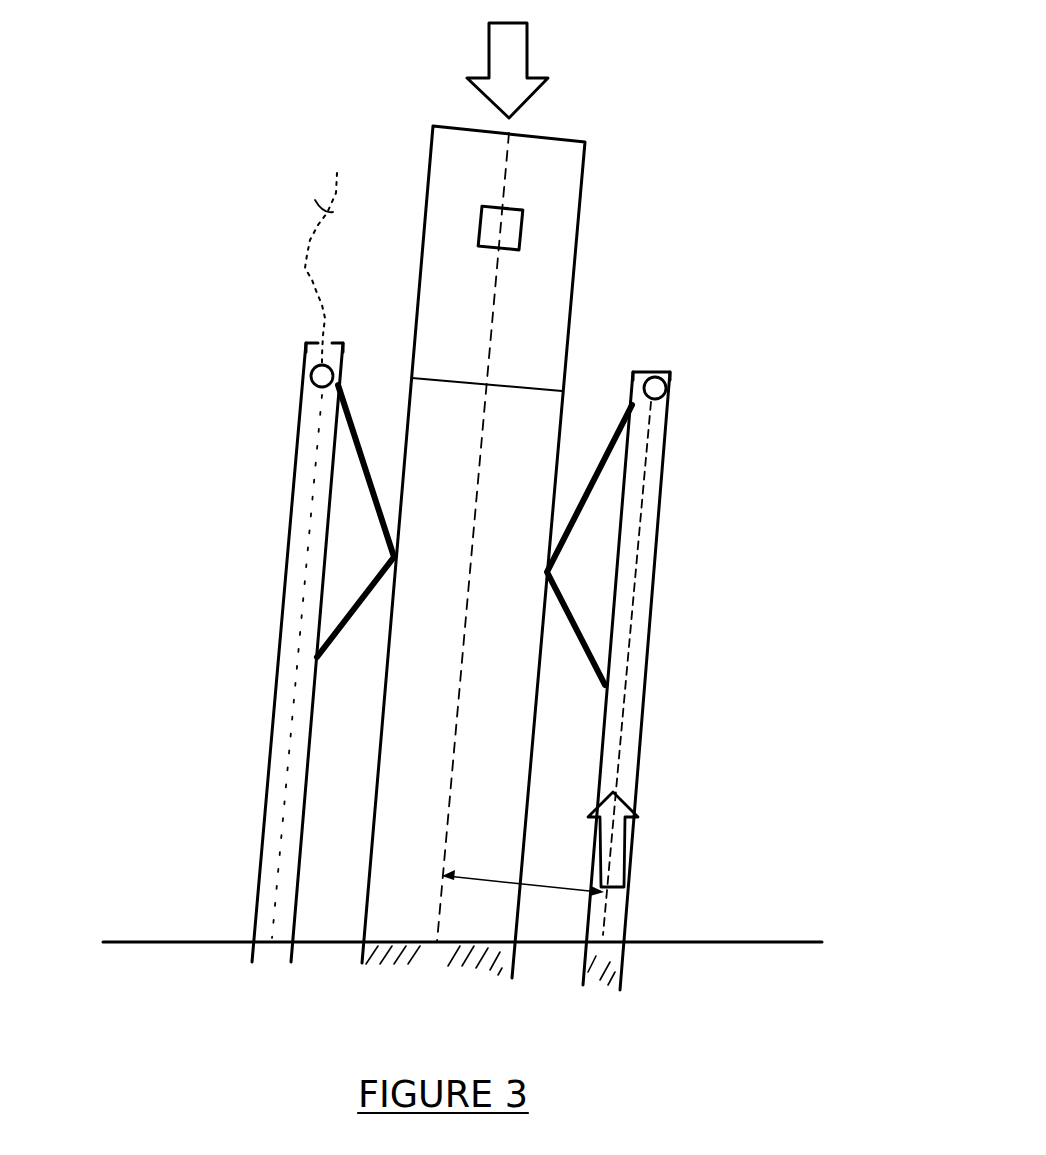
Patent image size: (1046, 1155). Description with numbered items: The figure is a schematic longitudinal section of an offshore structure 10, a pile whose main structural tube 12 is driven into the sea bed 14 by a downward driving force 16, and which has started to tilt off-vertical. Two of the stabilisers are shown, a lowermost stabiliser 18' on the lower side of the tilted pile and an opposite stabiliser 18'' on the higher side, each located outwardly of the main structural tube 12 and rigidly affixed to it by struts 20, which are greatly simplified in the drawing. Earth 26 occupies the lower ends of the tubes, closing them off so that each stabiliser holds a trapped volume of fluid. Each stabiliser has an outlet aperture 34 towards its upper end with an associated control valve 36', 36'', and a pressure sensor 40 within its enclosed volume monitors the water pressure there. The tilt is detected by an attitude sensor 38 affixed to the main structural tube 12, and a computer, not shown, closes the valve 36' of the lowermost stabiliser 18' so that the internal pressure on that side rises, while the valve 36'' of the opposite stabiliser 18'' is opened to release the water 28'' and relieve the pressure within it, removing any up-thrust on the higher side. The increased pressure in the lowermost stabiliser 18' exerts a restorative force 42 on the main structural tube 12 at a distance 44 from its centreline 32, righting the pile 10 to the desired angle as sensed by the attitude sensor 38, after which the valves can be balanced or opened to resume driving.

The offshore structure 10 is at (660, 76).
The main structural tube 12 is at (577, 233).
The sea bed 14 is at (708, 942).
The driving force 16 is at (517, 52).
The lowermost stabiliser 18' is at (662, 681).
The opposite stabiliser 18'' is at (266, 652).
The struts 20 is at (367, 500).
The earth 26 is at (436, 961).
The water 28'' is at (310, 269).
The centreline 32 is at (461, 737).
The outlet aperture 34 is at (323, 345).
The valve of the lowermost stabiliser 36' is at (688, 393).
The valve of the opposite stabiliser 36'' is at (292, 394).
The attitude sensor 38 is at (500, 228).
The pressure sensors 40 is at (316, 421).
The restorative force 42 is at (620, 842).
The distance 44 is at (543, 880).